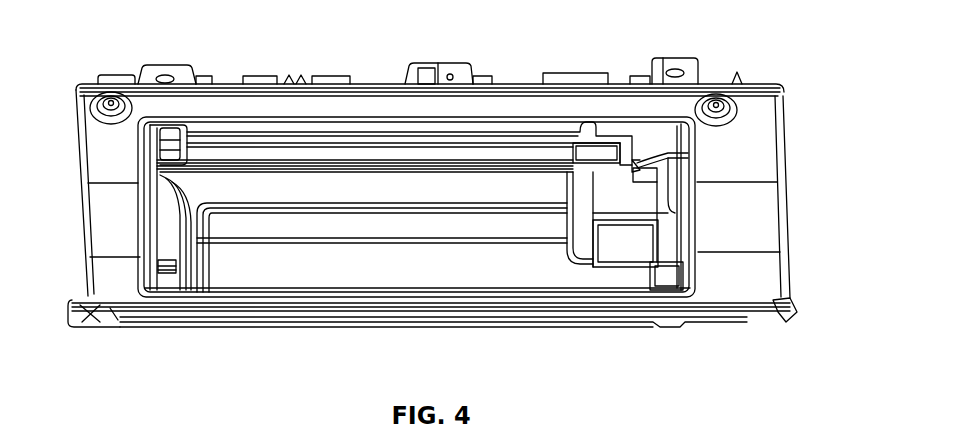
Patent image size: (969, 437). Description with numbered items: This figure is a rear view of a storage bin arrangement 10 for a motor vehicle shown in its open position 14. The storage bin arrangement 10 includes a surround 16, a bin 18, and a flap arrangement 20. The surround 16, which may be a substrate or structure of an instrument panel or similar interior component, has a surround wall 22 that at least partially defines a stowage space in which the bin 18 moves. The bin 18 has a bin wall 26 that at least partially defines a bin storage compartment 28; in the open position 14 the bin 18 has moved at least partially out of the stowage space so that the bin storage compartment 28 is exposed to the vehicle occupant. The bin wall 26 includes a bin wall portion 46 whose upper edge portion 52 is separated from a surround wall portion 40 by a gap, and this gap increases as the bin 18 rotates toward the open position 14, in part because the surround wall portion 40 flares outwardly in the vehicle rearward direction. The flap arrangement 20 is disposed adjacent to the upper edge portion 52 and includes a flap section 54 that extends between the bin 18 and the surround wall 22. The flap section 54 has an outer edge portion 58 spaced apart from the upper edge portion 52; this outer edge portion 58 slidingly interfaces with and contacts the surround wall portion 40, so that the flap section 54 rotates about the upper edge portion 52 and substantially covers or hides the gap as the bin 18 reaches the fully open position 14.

The storage bin arrangement 10 is at (764, 53).
The open position 14 is at (796, 80).
The surround 16 is at (250, 107).
The bin 18 is at (513, 185).
The flap arrangement 20 is at (579, 132).
The surround wall 22 is at (163, 243).
The bin wall 26 is at (325, 202).
The bin storage compartment 28 is at (553, 270).
The surround wall portion 40 is at (408, 126).
The bin wall portion 46 is at (397, 198).
The upper edge portion 52 is at (400, 170).
The flap section 54 is at (492, 157).
The outer edge portion 58 is at (470, 130).